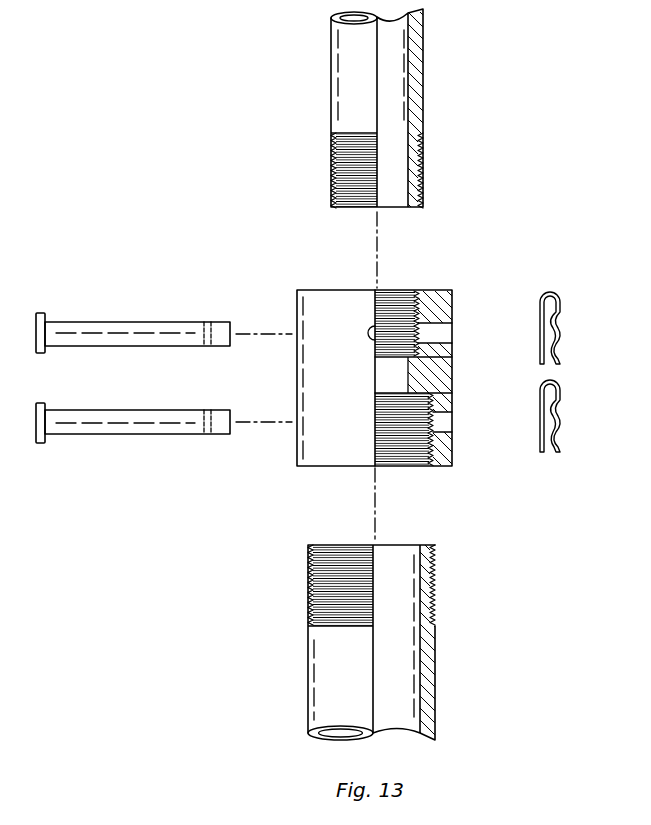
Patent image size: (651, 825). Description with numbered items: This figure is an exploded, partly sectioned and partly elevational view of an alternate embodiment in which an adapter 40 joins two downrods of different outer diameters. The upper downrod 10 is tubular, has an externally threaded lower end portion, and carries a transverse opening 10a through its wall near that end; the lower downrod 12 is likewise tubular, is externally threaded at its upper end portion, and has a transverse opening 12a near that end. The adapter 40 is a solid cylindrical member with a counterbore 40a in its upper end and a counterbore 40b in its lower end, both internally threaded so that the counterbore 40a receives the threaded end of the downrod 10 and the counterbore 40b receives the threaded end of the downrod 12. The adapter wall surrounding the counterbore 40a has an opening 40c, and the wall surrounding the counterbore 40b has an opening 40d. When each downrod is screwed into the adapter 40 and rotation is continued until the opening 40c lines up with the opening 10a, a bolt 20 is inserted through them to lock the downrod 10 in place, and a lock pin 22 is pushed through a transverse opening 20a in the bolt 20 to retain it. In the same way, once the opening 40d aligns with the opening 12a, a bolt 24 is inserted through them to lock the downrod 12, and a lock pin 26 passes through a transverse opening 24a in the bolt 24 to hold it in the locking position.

The downrod 10 is at (331, 76).
The transverse opening 10a is at (424, 182).
The downrod 12 is at (308, 680).
The transverse opening 12a is at (436, 590).
The bolt 20 is at (118, 321).
The transverse opening 20a is at (195, 328).
The lock pin 22 is at (563, 303).
The bolt 24 is at (118, 435).
The transverse opening 24a is at (195, 426).
The lock pin 26 is at (563, 391).
The adapter 40 is at (320, 286).
The counterbore 40a is at (398, 304).
The counterbore 40b is at (398, 448).
The opening 40c is at (447, 328).
The opening 40d is at (447, 425).